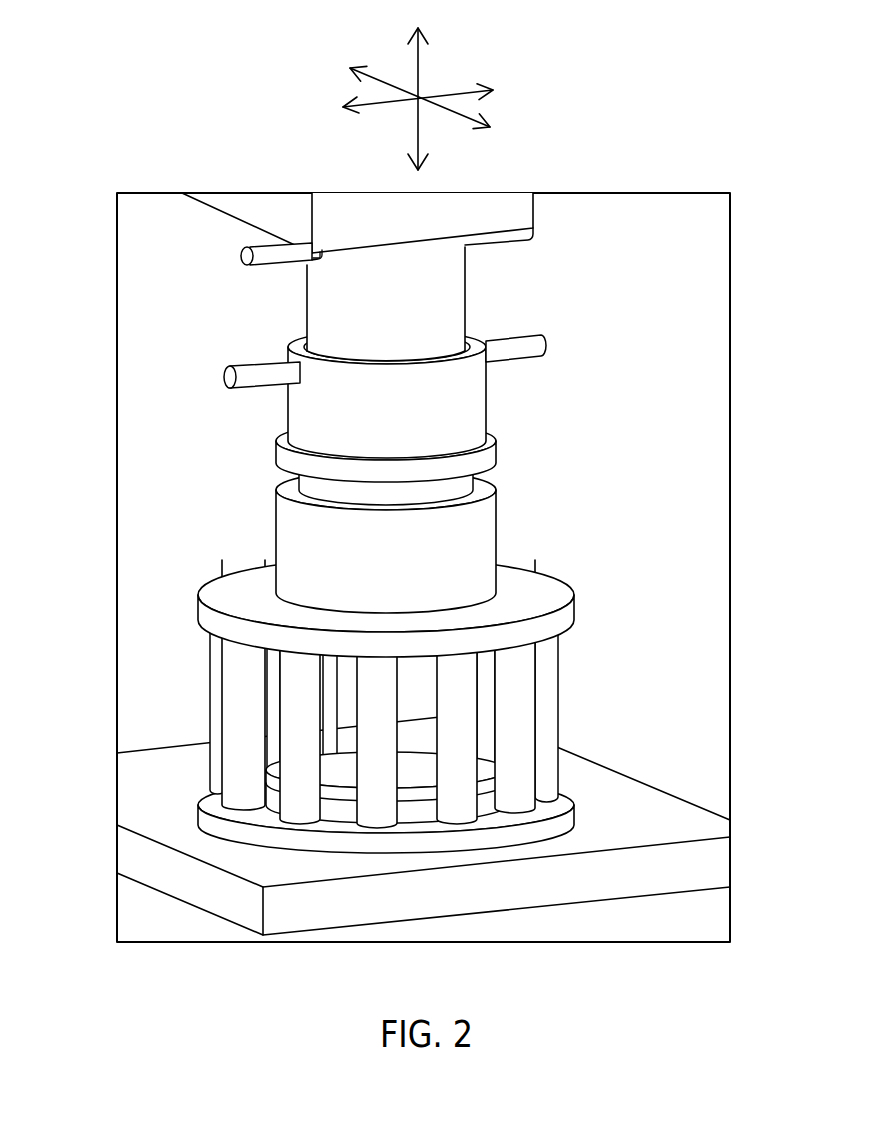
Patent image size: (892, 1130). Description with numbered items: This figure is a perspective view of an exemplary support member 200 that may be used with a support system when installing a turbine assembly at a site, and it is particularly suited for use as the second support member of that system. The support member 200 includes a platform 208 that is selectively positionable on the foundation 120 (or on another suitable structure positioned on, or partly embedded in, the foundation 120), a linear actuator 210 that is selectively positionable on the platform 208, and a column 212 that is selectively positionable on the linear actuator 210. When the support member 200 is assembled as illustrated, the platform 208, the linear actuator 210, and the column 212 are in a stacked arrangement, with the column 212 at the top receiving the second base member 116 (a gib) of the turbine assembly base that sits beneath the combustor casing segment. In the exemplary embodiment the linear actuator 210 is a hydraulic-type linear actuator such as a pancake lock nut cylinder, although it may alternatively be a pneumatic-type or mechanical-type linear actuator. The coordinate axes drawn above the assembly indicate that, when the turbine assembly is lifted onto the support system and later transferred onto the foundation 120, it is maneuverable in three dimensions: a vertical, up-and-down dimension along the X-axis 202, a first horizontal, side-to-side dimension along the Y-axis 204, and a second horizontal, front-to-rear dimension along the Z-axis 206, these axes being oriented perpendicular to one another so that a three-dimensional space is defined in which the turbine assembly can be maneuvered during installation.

The support member 200 is at (435, 546).
The second base member 116 is at (277, 207).
The foundation 120 is at (700, 862).
The X-axis 202 is at (422, 68).
The Y-axis 204 is at (385, 102).
The Z-axis 206 is at (385, 82).
The platform 208 is at (580, 678).
The linear actuator 210 is at (543, 453).
The column 212 is at (497, 332).